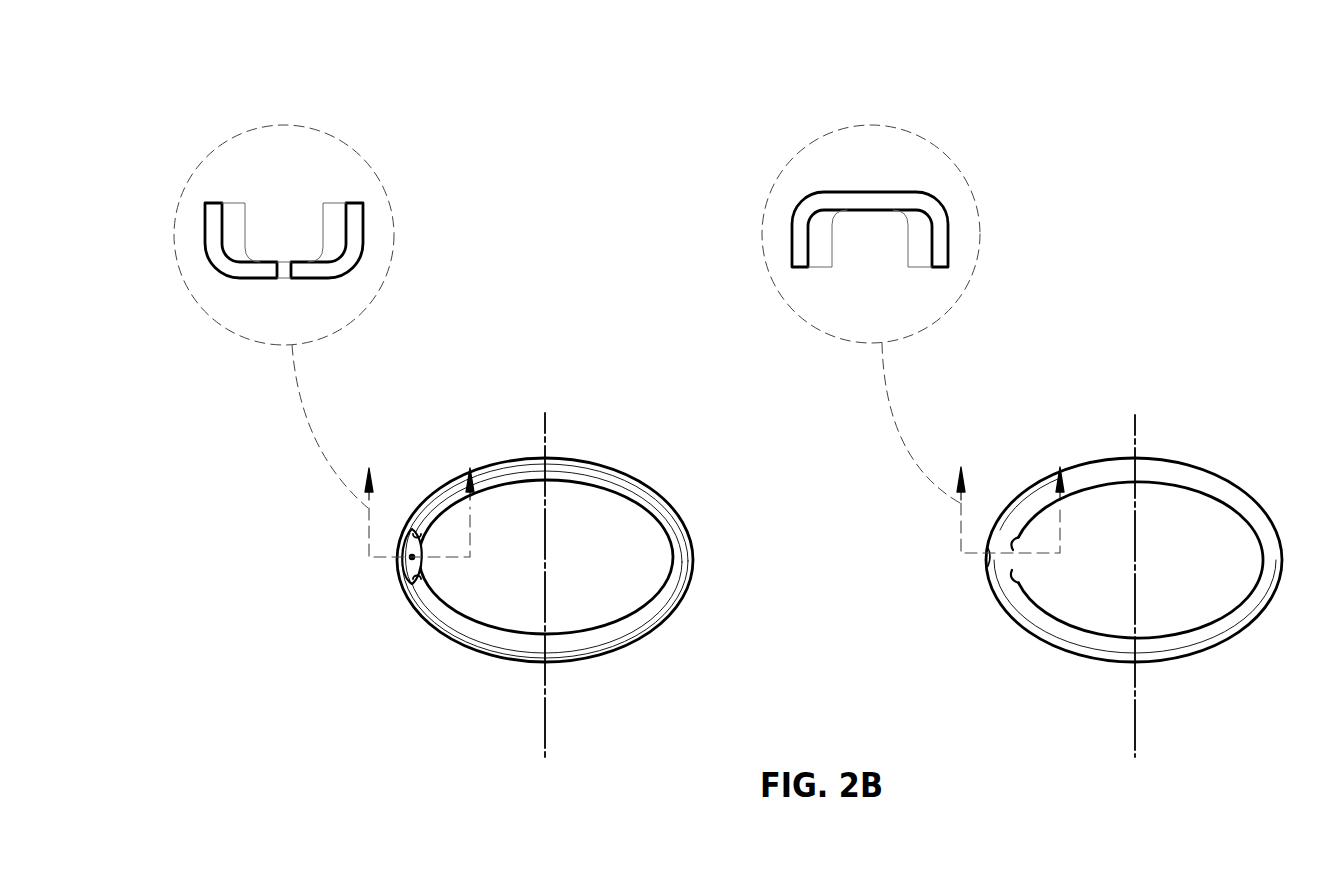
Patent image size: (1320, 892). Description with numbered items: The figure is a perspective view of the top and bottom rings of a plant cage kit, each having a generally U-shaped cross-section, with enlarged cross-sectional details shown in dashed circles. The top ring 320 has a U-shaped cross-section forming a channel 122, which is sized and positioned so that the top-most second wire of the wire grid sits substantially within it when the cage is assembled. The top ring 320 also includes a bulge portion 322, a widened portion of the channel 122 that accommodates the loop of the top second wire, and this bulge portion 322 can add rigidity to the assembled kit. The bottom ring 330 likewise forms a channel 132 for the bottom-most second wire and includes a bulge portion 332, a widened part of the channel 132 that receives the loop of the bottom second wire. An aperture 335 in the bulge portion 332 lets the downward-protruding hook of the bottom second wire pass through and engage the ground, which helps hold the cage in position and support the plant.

The channel 132 is at (262, 187).
The aperture 335 is at (271, 299).
The bottom ring 330 is at (592, 474).
The bulge portion 332 is at (405, 563).
The channel 122 is at (838, 278).
The top ring 320 is at (1182, 477).
The bulge portion 322 is at (995, 563).